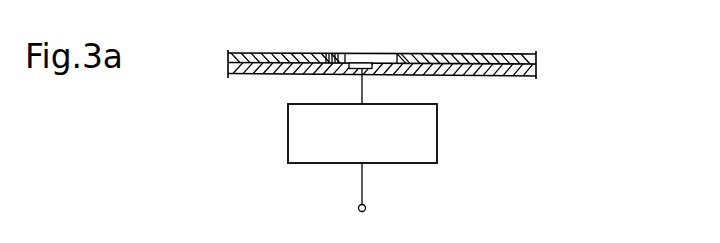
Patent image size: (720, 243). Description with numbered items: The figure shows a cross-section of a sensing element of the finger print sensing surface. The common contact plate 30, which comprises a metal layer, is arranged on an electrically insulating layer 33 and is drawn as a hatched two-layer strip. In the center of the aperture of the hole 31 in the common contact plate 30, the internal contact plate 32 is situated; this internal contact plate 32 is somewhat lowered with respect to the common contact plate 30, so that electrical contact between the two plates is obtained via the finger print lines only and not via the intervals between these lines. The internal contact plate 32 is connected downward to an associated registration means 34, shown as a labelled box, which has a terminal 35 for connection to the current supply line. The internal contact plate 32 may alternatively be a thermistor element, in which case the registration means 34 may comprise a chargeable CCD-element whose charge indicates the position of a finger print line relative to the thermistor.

The common contact plate 30 is at (423, 53).
The hole 31 is at (333, 53).
The internal contact plate 32 is at (362, 61).
The electrically insulating layer 33 is at (265, 76).
The registration means 34 is at (437, 112).
The terminal 35 is at (366, 207).